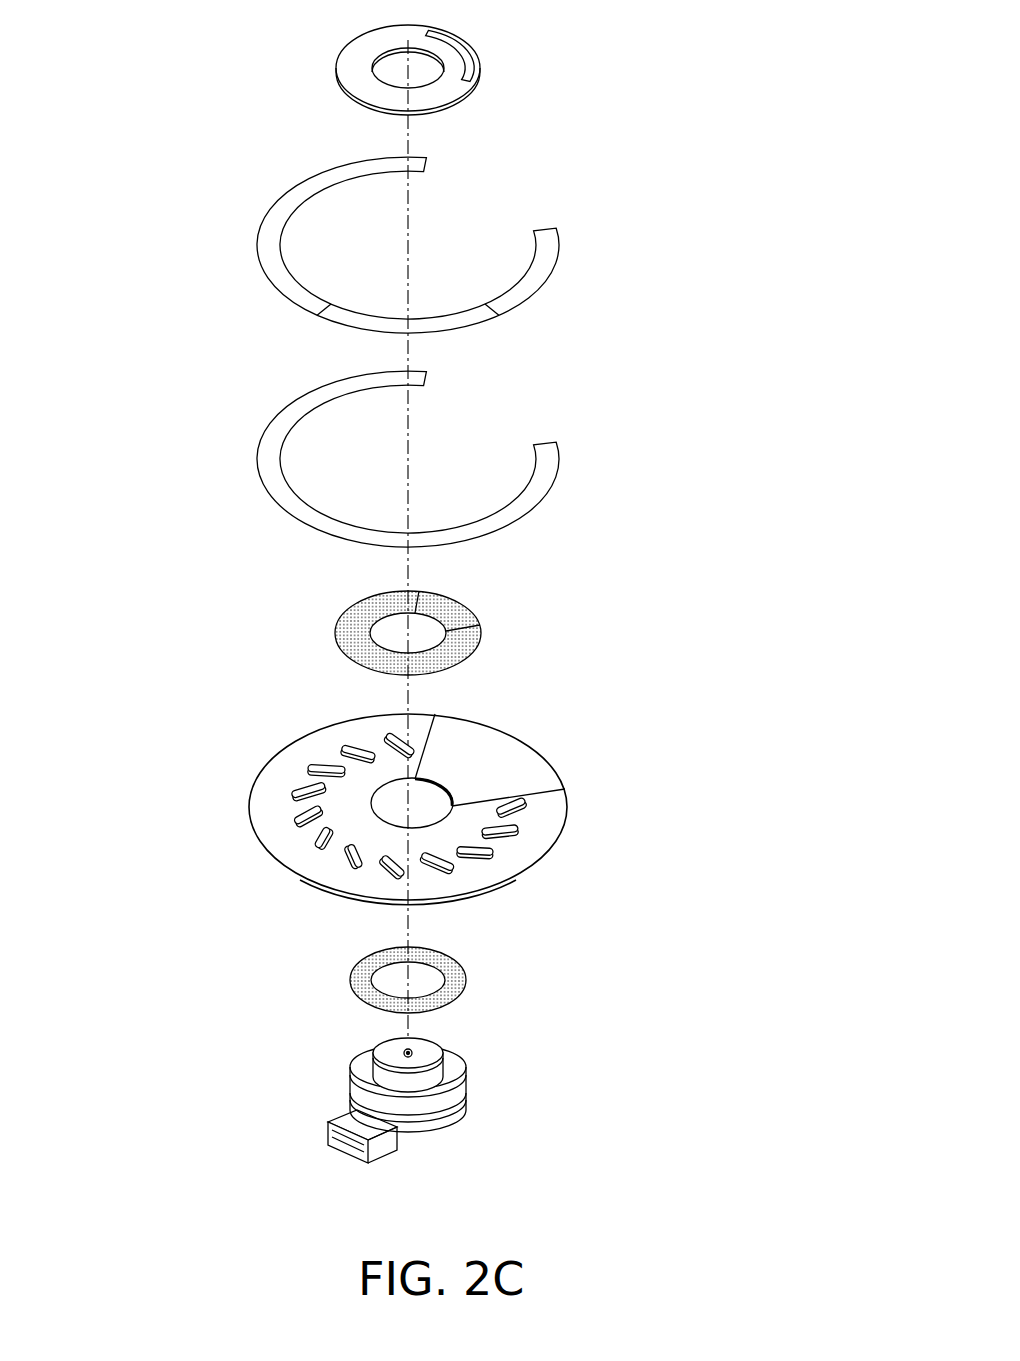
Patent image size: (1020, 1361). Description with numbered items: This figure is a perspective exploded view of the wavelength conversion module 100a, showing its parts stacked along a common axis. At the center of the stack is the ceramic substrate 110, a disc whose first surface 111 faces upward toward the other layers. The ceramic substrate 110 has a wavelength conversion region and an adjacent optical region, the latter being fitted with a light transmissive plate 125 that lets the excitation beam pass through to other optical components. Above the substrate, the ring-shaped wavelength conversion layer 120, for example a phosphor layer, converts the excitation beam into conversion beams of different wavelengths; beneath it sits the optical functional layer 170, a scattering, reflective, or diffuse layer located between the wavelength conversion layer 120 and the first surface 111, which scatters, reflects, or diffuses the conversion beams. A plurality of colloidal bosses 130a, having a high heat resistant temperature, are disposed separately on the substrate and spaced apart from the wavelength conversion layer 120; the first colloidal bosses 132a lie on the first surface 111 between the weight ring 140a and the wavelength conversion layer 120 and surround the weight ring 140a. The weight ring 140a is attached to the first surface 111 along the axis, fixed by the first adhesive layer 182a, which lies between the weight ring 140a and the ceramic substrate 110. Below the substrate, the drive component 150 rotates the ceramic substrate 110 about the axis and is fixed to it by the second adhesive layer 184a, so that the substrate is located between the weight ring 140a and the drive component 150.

The wavelength conversion module 100a is at (758, 1205).
The ceramic substrate 110 is at (382, 809).
The first surface 111 is at (508, 861).
The wavelength conversion layer 120 is at (547, 255).
The light transmissive plate 125 is at (503, 754).
The colloidal bosses 130a is at (318, 798).
The first colloidal bosses 132a is at (347, 748).
The weight ring 140a is at (473, 85).
The drive component 150 is at (467, 1075).
The optical functional layer 170 is at (547, 462).
The first adhesive layer 182a is at (463, 630).
The second adhesive layer 184a is at (460, 977).